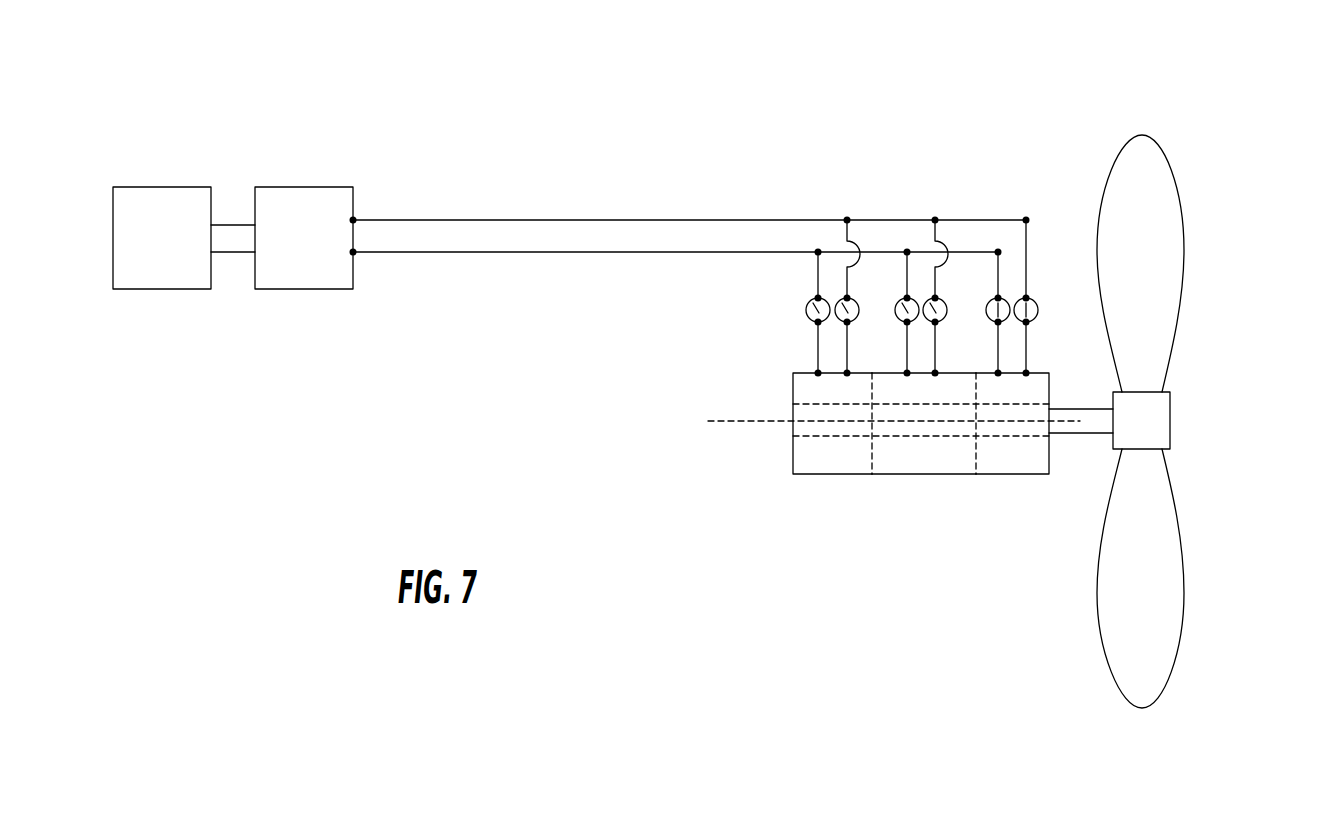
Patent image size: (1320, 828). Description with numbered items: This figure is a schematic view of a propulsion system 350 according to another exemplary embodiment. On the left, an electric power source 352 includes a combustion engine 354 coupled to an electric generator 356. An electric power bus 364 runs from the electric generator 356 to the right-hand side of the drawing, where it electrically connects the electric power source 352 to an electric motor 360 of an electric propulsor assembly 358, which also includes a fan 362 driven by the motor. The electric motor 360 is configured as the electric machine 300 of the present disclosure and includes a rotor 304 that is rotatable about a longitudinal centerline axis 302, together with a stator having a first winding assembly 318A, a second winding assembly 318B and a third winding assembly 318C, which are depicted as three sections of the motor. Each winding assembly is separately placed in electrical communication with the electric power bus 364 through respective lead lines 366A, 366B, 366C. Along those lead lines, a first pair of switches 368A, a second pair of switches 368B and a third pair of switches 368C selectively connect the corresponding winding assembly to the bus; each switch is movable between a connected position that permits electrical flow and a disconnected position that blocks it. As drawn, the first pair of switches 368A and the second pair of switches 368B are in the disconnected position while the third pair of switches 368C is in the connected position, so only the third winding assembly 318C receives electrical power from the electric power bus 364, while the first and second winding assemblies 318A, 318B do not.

The propulsion system 350 is at (652, 127).
The electric power source 352 is at (228, 145).
The combustion engine 354 is at (181, 253).
The electric generator 356 is at (324, 253).
The electric propulsor assembly 358 is at (1098, 421).
The electric motor 360 is at (876, 476).
The electric machine 300 is at (876, 476).
The fan 362 is at (1202, 257).
The electric power bus 364 is at (723, 212).
The lead lines 366A is at (848, 267).
The lead lines 366B is at (934, 272).
The lead lines 366C is at (998, 262).
The first pair of switches 368A is at (847, 322).
The second pair of switches 368B is at (935, 323).
The third pair of switches 368C is at (998, 323).
The first winding assembly 318A is at (833, 483).
The second winding assembly 318B is at (927, 485).
The third winding assembly 318C is at (1012, 485).
The longitudinal centerline axis 302 is at (737, 421).
The rotor 304 is at (802, 430).